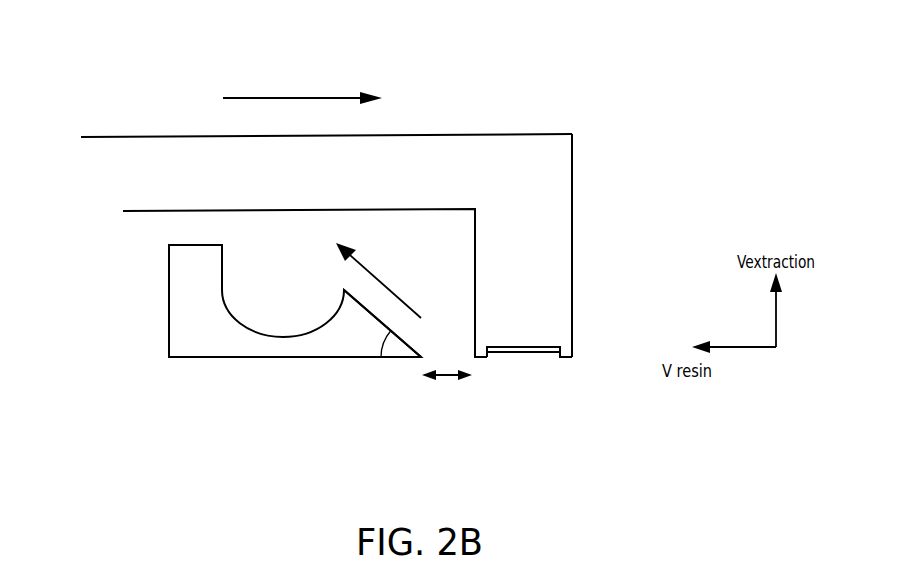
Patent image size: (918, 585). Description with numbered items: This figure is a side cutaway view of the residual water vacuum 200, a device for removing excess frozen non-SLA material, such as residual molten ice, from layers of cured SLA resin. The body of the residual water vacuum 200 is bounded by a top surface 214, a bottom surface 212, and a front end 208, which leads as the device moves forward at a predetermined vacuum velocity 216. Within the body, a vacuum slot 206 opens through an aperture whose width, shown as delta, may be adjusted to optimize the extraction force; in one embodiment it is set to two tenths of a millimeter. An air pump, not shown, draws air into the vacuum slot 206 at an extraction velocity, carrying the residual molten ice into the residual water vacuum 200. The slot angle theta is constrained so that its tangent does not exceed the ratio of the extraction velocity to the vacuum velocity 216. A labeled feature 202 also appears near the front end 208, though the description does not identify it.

The residual water vacuum 200 is at (371, 252).
The resin inlet 202 is at (525, 360).
The vacuum slot 206 is at (445, 347).
The front end 208 is at (592, 232).
The bottom surface 212 is at (355, 393).
The top surface 214 is at (450, 120).
The vacuum velocity 216 is at (302, 88).